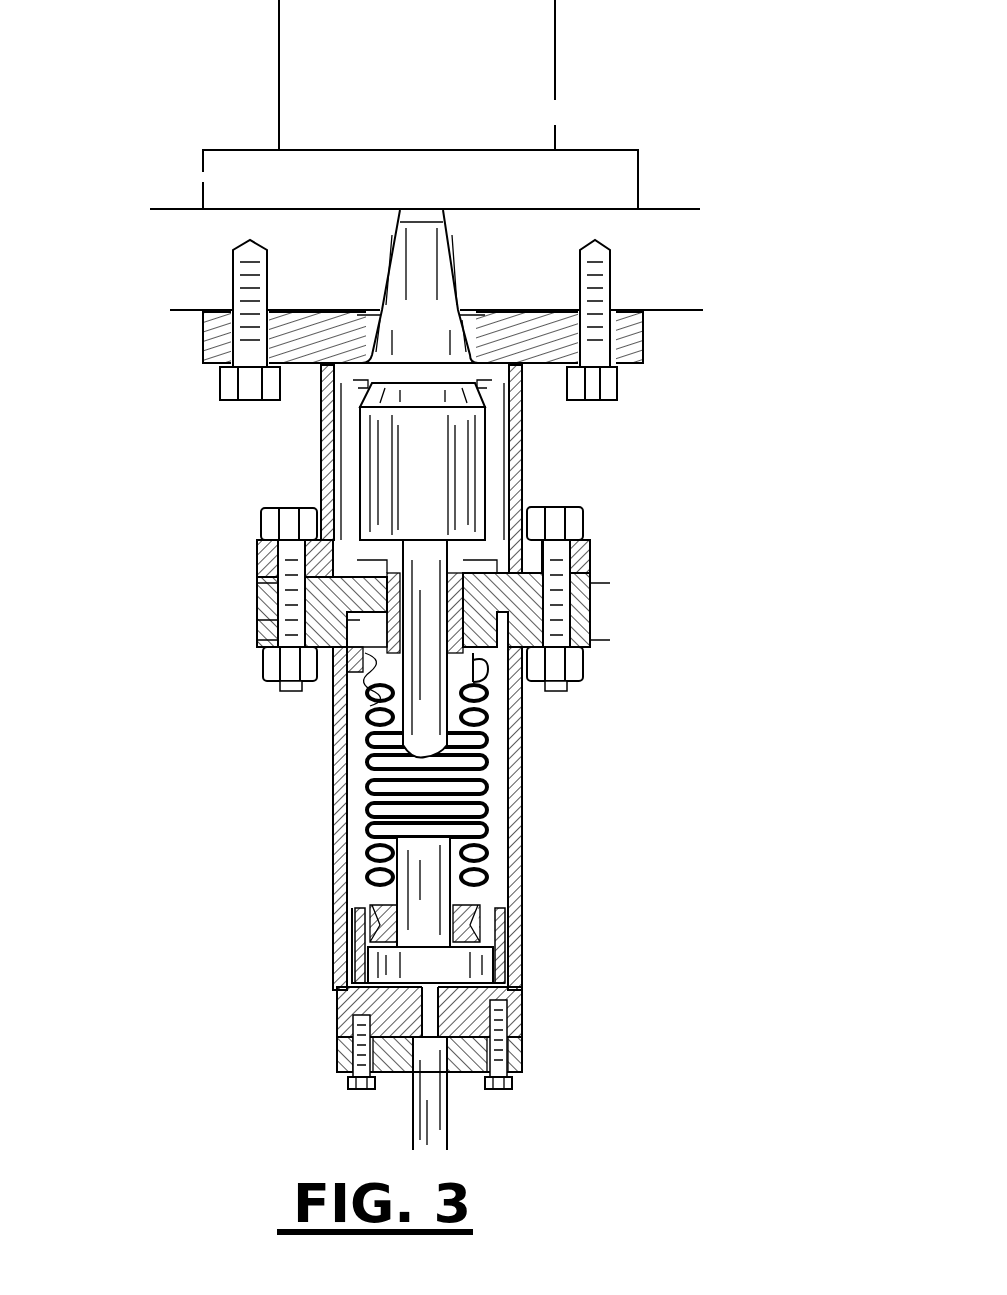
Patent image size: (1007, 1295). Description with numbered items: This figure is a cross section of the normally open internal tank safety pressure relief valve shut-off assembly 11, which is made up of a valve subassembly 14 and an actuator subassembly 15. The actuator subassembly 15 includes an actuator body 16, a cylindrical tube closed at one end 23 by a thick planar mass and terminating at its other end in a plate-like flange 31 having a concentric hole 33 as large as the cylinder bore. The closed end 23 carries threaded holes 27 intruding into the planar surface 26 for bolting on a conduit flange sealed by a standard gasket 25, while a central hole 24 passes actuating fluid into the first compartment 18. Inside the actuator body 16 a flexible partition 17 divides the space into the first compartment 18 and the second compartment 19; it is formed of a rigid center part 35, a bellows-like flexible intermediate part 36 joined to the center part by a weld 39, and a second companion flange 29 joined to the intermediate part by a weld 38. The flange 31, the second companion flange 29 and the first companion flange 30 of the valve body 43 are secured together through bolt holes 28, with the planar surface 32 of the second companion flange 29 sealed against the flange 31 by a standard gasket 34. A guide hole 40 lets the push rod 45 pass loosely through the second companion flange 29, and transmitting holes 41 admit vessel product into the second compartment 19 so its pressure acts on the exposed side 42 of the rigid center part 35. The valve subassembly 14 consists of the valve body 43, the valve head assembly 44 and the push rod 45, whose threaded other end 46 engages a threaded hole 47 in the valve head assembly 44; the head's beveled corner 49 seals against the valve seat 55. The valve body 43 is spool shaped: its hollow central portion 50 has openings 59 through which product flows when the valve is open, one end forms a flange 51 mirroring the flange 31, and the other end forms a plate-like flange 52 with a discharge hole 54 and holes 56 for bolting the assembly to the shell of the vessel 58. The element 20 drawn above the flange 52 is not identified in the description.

The NOITSS valve assembly 11 is at (847, 689).
The valve subassembly 14 is at (735, 462).
The actuator subassembly 15 is at (711, 916).
The actuator body 16 is at (330, 768).
The flexible partition 17 is at (365, 790).
The first compartment 18 is at (360, 832).
The second compartment 19 is at (393, 897).
The support member 20 is at (415, 105).
The closed end 23 is at (400, 1007).
The hole 24 is at (440, 1017).
The standard gasket 25 is at (400, 1047).
The planar surface 26 is at (337, 1057).
The holes 27 is at (353, 1022).
The bolt holes 28 is at (277, 633).
The second companion flange 29 is at (257, 593).
The first companion flange 30 is at (257, 557).
The plate-like flange 31 is at (257, 623).
The planar surface 32 is at (590, 593).
The hole 33 is at (365, 676).
The standard gasket 34 is at (257, 610).
The rigid center part 35 is at (438, 962).
The flexible intermediate part 36 is at (497, 793).
The weld 38 is at (427, 670).
The weld 39 is at (478, 940).
The guide hole 40 is at (457, 572).
The transmitting holes 41 is at (490, 563).
The exposed side 42 is at (478, 900).
The valve body 43 is at (470, 478).
The valve head assembly 44 is at (427, 467).
The push rod 45 is at (483, 655).
The other end 46 is at (420, 553).
The threaded hole 47 is at (485, 488).
The beveled corner 49 is at (473, 393).
The central portion 50 is at (323, 467).
The flange 51 is at (257, 542).
The flange 52 is at (203, 322).
The hole 54 is at (362, 335).
The valve seat 55 is at (480, 380).
The holes 56 is at (222, 352).
The shell of the vessel 58 is at (355, 258).
The openings 59 is at (360, 387).